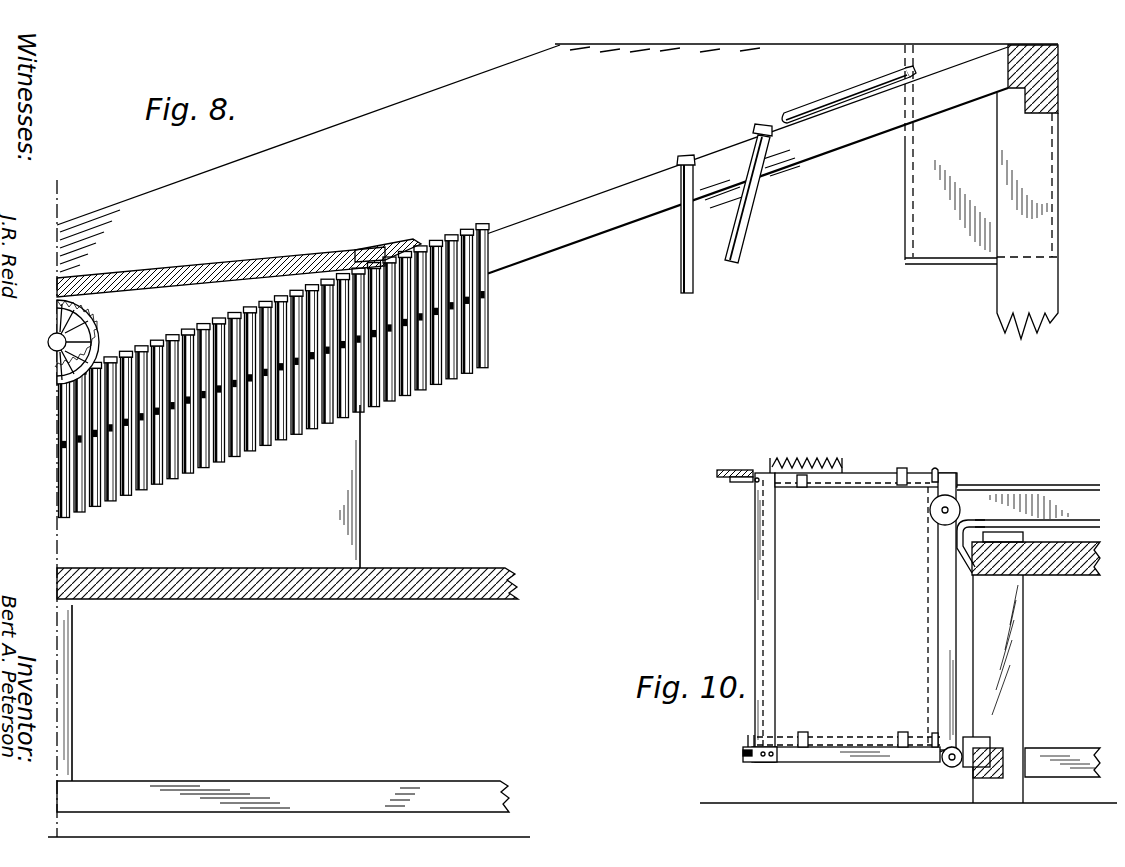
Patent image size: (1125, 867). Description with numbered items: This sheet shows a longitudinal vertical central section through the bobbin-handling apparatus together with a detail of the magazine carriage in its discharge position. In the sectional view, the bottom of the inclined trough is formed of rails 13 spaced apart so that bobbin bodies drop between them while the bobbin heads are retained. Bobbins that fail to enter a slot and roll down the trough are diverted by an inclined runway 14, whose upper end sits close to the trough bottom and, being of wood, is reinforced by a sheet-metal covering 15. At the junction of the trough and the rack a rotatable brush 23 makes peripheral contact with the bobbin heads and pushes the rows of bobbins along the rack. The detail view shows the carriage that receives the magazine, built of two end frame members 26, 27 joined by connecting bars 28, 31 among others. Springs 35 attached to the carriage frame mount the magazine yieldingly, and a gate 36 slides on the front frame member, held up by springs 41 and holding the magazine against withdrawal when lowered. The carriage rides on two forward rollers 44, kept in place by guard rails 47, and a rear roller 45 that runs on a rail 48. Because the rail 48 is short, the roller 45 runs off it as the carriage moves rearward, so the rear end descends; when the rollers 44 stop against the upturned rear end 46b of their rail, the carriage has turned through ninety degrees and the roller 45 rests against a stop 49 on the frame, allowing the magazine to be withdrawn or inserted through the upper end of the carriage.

In FIG. 8, the rails 13 is at (628, 212).
In FIG. 8, the inclined runway 14 is at (200, 265).
In FIG. 8, the sheet-metal covering 15 is at (400, 242).
In FIG. 8, the rotatable brush 23 is at (55, 349).
In FIG. 10, the end frame member 26 is at (876, 474).
In FIG. 10, the end frame member 27 is at (852, 763).
In FIG. 10, the connecting bar 28 is at (757, 613).
In FIG. 10, the connecting bar 31 is at (940, 600).
In FIG. 10, the springs 35 is at (904, 468).
In FIG. 10, the gate 36 is at (740, 470).
In FIG. 10, the springs 41 is at (792, 462).
In FIG. 10, the rollers 44 is at (960, 523).
In FIG. 10, the roller 45 is at (950, 766).
In FIG. 10, the upturned rear end 46b is at (929, 509).
In FIG. 10, the guard rails 47 is at (1042, 490).
In FIG. 10, the rail 48 is at (1060, 526).
In FIG. 10, the stop 49 is at (976, 742).